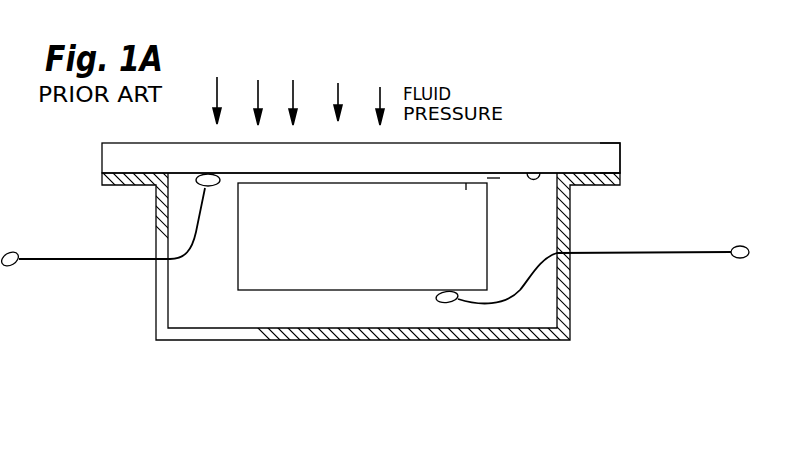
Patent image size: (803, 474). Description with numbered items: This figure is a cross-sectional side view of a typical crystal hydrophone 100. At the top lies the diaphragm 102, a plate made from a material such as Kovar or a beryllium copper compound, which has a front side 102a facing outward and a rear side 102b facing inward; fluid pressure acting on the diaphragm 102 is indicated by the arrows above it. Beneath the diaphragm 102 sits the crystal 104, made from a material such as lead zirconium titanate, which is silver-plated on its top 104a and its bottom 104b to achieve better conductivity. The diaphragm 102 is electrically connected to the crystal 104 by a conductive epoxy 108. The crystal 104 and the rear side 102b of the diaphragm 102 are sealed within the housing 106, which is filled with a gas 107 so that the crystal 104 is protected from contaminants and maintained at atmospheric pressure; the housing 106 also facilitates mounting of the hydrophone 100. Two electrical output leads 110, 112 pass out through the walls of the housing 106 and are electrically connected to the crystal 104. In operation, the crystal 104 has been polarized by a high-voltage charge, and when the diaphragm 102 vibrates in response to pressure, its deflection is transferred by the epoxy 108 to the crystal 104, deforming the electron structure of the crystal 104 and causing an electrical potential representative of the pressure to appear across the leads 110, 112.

The crystal hydrophone 100 is at (193, 413).
The diaphragm 102 is at (361, 158).
The front side of diaphragm 102a is at (600, 143).
The rear side of diaphragm 102b is at (538, 178).
The crystal 104 is at (362, 236).
The top of crystal 104a is at (466, 185).
The bottom of crystal 104b is at (430, 283).
The housing 106 is at (399, 340).
The gas 107 is at (272, 310).
The conductive epoxy 108 is at (490, 178).
The electrical output lead 110 is at (11, 252).
The electrical output lead 112 is at (742, 246).